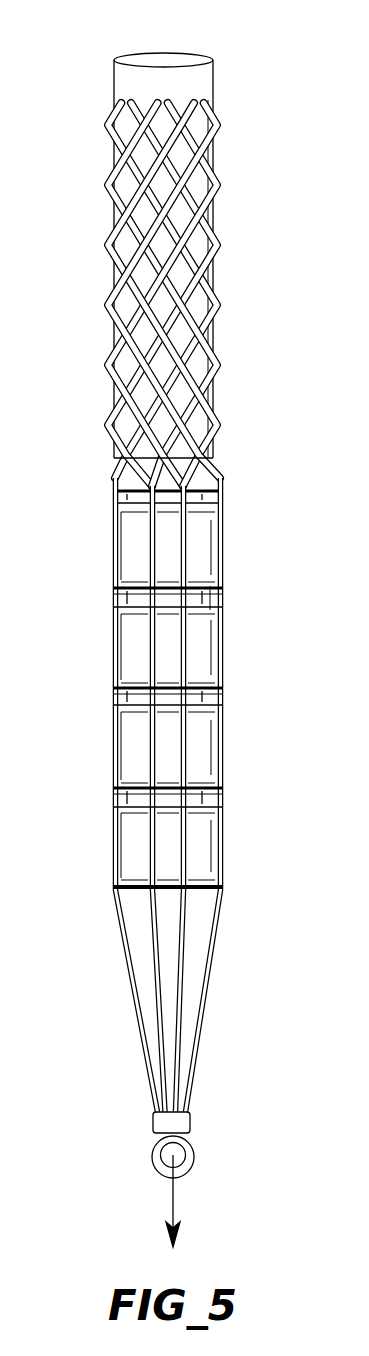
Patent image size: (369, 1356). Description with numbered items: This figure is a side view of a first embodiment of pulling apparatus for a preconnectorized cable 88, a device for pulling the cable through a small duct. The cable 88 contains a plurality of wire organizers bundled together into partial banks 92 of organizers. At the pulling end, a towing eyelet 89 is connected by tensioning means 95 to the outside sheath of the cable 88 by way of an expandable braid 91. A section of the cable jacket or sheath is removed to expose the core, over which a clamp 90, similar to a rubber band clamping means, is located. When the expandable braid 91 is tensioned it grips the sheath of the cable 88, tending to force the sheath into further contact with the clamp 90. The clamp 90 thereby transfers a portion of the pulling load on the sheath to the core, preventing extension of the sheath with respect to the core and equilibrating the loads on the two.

The cable 88 is at (158, 82).
The towing eyelet 89 is at (158, 1168).
The clamp 90 is at (120, 478).
The expandable braid 91 is at (213, 432).
The partial banks of organizers 92 is at (135, 556).
The tensioning means 95 is at (183, 628).